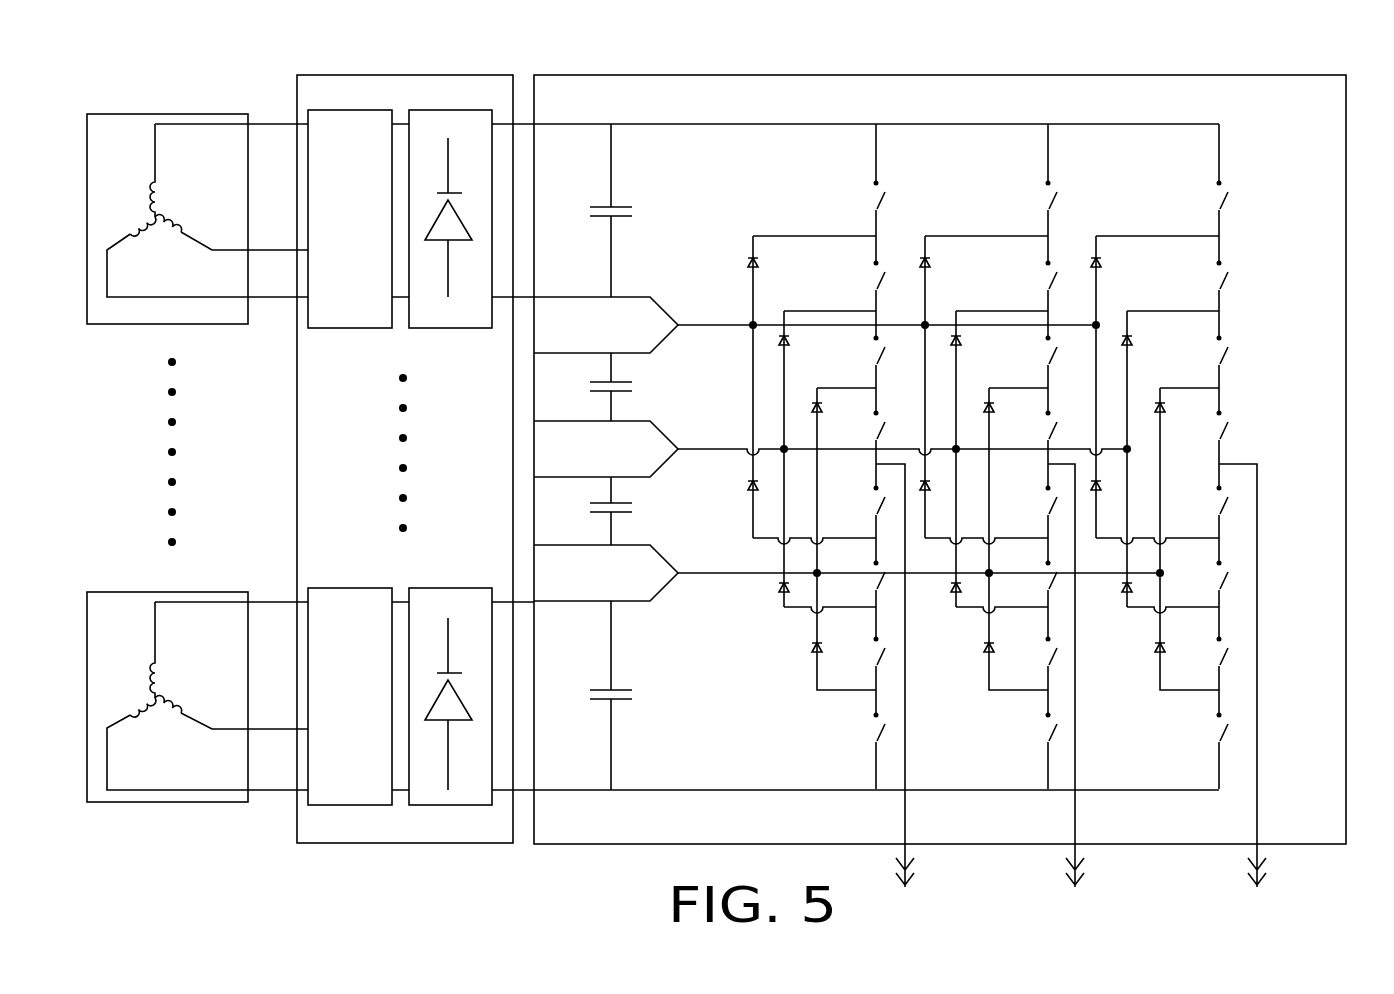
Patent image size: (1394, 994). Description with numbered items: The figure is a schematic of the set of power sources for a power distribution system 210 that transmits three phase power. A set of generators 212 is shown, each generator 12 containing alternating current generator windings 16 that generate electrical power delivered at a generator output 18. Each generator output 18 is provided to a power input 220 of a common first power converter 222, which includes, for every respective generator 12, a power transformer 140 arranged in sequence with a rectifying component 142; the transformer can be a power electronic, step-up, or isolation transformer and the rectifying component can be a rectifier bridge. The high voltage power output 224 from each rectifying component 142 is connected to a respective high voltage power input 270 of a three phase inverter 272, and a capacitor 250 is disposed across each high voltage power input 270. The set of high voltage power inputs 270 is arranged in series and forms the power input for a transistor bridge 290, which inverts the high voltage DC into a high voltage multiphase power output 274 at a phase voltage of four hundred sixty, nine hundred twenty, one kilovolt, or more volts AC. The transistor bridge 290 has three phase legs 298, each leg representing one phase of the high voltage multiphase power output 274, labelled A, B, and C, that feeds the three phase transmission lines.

The generator 12 is at (141, 150).
The alternating current generator windings 16 is at (146, 208).
The generator output 18 is at (262, 113).
The power transformer 140 is at (372, 156).
The rectifying component 142 is at (471, 323).
The power distribution system 210 is at (799, 49).
The set of generators 212 is at (189, 100).
The power input 220 is at (289, 76).
The first power converter 222 is at (427, 104).
The power output 224 is at (495, 111).
The capacitor 250 is at (617, 206).
The high voltage power input 270 is at (528, 90).
The three phase inverter 272 is at (819, 155).
The high voltage multiphase power output 274 is at (1277, 870).
The transistor bridge 290 is at (1099, 210).
The phase legs 298 is at (891, 452).